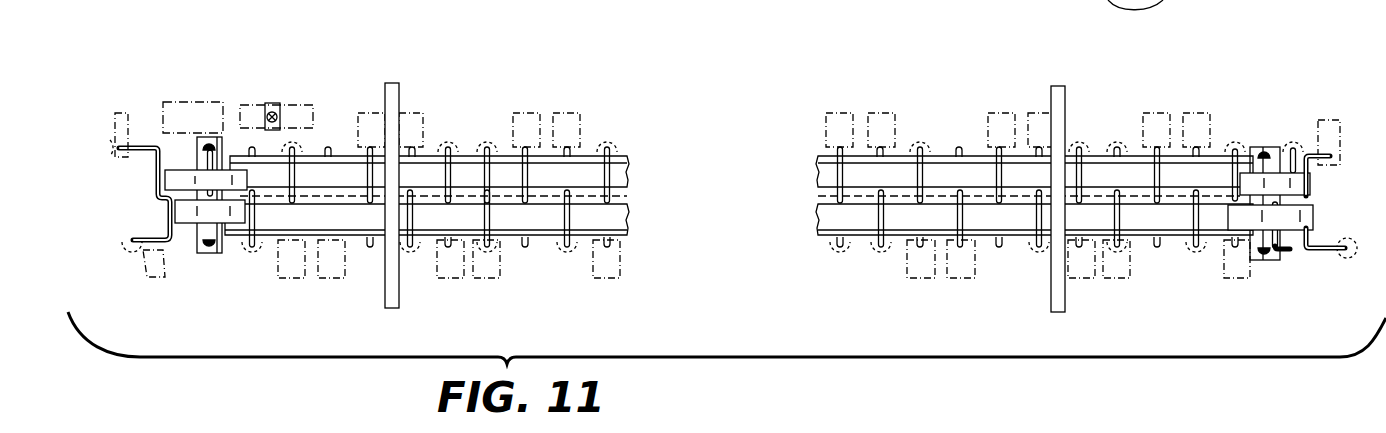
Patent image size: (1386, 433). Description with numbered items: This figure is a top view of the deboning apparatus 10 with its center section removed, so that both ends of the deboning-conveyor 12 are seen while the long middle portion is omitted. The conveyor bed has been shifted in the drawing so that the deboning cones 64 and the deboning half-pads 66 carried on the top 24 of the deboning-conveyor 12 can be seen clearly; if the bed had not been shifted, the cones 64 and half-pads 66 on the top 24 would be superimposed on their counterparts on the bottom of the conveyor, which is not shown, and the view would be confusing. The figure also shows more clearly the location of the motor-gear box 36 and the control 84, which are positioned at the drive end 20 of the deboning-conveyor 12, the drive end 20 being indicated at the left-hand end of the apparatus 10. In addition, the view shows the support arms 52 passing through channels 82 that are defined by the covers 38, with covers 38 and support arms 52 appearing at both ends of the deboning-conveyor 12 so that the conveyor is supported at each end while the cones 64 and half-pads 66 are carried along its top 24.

The deboning apparatus 10 is at (650, 58).
The deboning-conveyor 12 is at (542, 262).
The drive end 20 is at (130, 198).
The top 24 is at (402, 193).
The motor-gear box 36 is at (230, 107).
The cover 38 is at (180, 178).
The support arm 52 is at (157, 168).
The deboning cone 64 is at (450, 140).
The deboning half-pad 66 is at (1117, 280).
The channel 82 is at (197, 195).
The control 84 is at (268, 103).